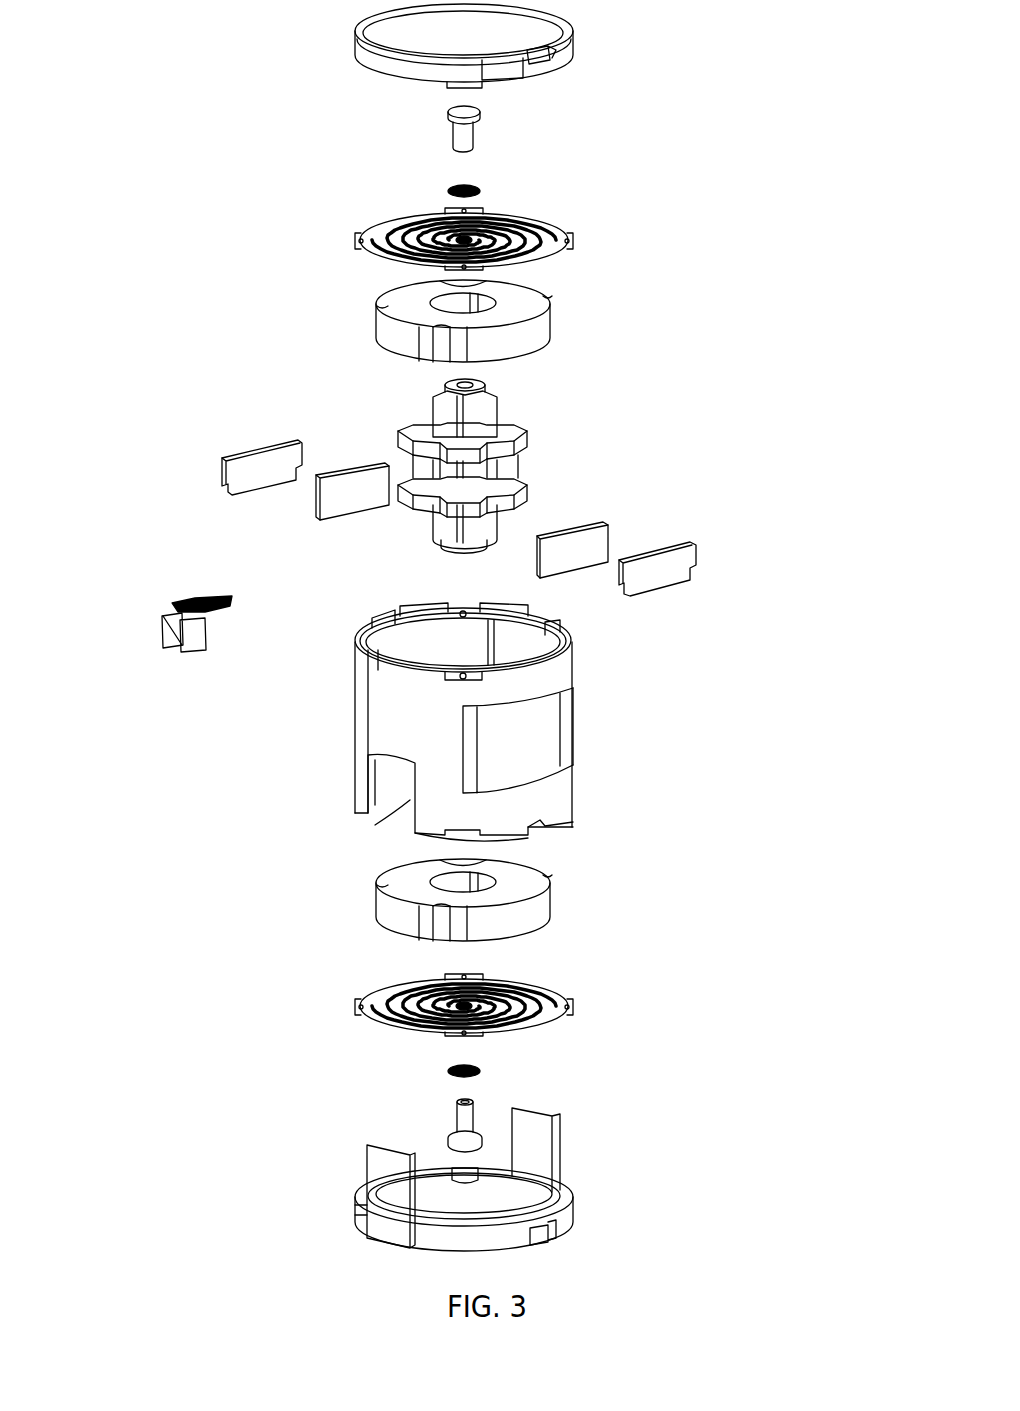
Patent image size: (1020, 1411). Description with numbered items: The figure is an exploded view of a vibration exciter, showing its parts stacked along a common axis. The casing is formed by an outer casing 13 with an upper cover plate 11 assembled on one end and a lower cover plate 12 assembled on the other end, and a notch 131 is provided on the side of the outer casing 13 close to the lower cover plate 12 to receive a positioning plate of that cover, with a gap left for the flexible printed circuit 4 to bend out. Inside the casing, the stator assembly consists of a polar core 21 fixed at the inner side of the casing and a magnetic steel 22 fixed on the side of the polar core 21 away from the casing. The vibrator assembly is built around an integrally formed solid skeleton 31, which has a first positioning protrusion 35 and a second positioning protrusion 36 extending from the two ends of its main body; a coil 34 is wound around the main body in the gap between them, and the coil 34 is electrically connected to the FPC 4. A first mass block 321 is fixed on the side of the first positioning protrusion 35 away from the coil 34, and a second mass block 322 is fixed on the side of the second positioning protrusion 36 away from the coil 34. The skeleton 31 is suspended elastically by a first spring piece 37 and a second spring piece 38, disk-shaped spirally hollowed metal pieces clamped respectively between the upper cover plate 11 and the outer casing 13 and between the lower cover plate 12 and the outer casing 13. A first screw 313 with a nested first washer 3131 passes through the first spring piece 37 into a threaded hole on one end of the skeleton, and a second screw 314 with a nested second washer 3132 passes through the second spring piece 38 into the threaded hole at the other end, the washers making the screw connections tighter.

The upper cover plate 11 is at (543, 30).
The lower cover plate 12 is at (563, 1178).
The outer casing 13 is at (555, 736).
The notch 131 is at (390, 825).
The polar core 21 is at (682, 563).
The magnetic steel 22 is at (340, 518).
The skeleton 31 is at (488, 415).
The first screw 313 is at (473, 141).
The first washer 3131 is at (478, 186).
The second washer 3132 is at (458, 1075).
The second screw 314 is at (453, 1113).
The first mass block 321 is at (548, 326).
The second mass block 322 is at (535, 916).
The coil 34 is at (490, 477).
The first positioning protrusion 35 is at (420, 428).
The second positioning protrusion 36 is at (480, 503).
The first spring piece 37 is at (550, 232).
The second spring piece 38 is at (548, 998).
The flexible printed circuit (FPC) 4 is at (162, 632).